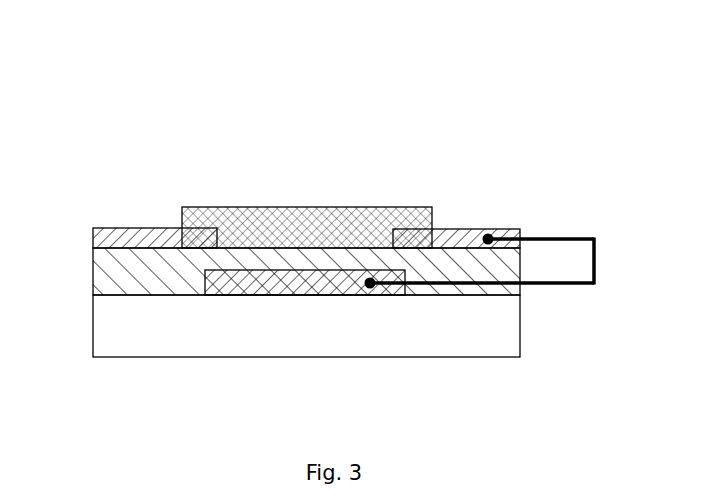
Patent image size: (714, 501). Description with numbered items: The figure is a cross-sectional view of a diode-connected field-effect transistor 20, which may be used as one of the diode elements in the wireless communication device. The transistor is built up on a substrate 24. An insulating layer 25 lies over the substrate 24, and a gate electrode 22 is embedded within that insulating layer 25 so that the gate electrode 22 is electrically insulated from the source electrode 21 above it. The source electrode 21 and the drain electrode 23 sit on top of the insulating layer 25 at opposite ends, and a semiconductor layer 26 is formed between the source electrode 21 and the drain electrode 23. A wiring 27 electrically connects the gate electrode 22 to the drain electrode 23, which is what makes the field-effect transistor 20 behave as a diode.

The diode-connected field-effect transistor 20 is at (325, 32).
The source electrode 21 is at (165, 227).
The gate electrode 22 is at (284, 295).
The drain electrode 23 is at (450, 228).
The substrate 24 is at (105, 322).
The insulating layer 25 is at (102, 268).
The semiconductor layer 26 is at (316, 207).
The wiring 27 is at (598, 258).